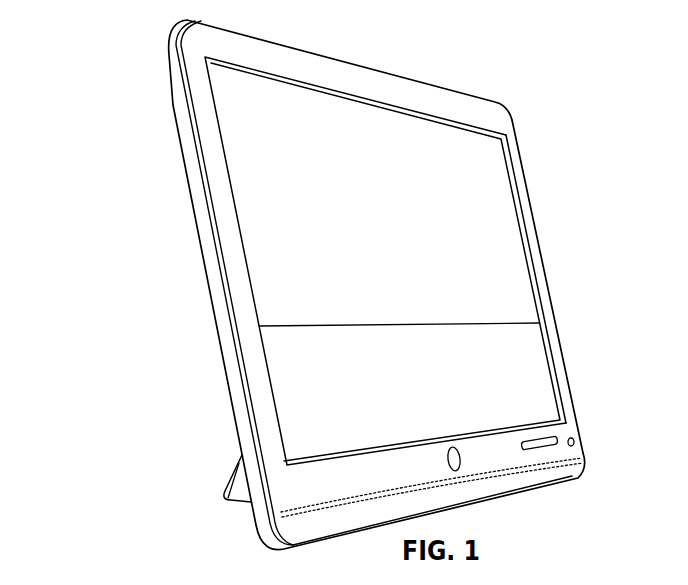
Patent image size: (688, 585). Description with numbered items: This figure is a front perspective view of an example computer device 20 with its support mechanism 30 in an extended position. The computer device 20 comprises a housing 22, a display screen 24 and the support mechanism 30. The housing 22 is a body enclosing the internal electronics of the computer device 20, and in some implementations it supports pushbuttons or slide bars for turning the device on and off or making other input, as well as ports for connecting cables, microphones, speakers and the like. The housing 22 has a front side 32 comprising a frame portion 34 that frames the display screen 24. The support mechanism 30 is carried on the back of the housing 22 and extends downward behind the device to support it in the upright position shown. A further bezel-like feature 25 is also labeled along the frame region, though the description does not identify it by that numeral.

The computer device 20 is at (146, 97).
The housing 22 is at (512, 91).
The display screen 24 is at (511, 261).
The bezel 25 is at (436, 121).
The support mechanism 30 is at (226, 459).
The front side 32 is at (585, 139).
The frame portion 34 is at (533, 206).